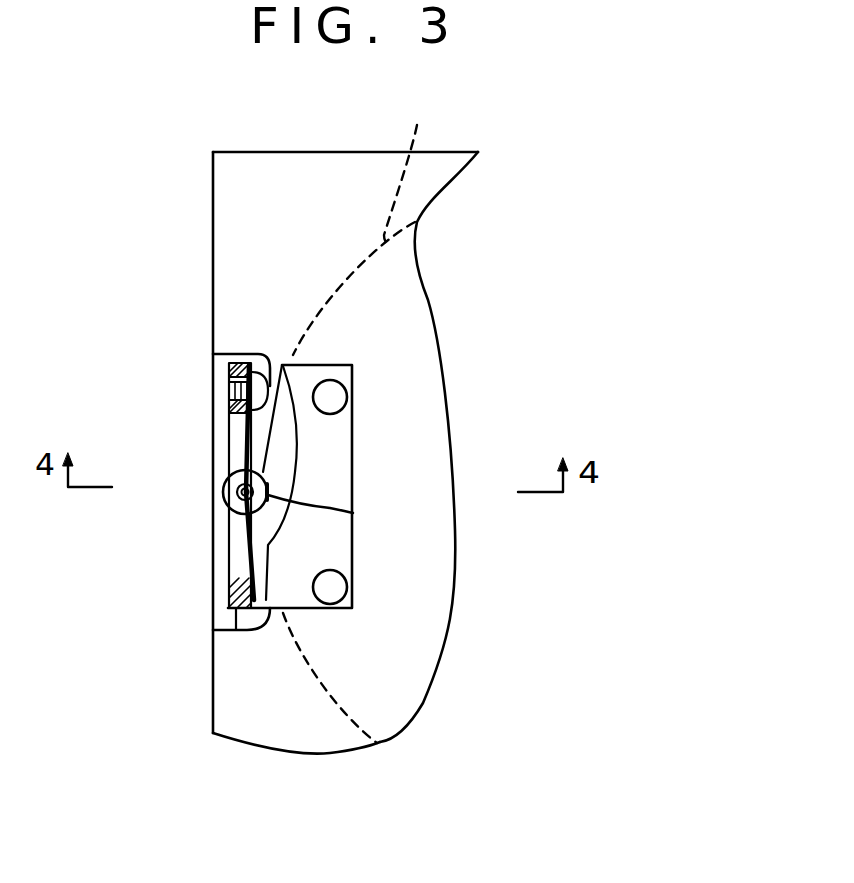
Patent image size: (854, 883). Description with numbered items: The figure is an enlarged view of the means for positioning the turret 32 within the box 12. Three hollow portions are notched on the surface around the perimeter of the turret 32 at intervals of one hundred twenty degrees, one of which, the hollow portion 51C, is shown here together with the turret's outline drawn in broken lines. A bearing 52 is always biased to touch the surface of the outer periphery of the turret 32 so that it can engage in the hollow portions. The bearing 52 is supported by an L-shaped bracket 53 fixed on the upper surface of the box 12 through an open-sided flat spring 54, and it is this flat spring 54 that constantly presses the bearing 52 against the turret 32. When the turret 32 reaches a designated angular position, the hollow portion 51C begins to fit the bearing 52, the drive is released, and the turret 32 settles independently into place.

The box 12 is at (228, 193).
The turret 32 is at (413, 418).
The L-shaped bracket 53 is at (340, 445).
The flat spring 54 is at (236, 443).
The bearing 52 is at (224, 497).
The hollow portion 51C is at (353, 513).